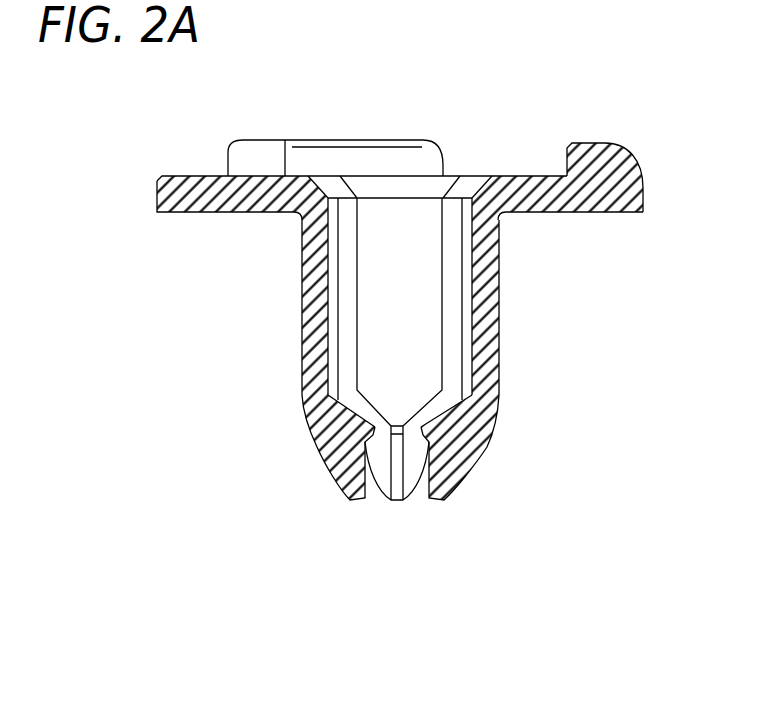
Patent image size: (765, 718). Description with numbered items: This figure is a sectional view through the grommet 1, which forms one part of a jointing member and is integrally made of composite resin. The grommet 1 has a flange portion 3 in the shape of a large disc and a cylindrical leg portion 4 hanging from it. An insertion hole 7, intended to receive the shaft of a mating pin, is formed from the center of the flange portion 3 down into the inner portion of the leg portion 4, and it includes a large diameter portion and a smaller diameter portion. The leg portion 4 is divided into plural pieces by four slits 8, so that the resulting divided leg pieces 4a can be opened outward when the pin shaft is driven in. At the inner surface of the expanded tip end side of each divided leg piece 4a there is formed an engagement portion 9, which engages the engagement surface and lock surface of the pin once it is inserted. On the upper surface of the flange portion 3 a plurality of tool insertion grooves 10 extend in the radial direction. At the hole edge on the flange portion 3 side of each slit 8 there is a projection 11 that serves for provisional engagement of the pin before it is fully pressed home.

The grommet 1 is at (617, 440).
The flange portion 3 is at (597, 143).
The leg portion 4 is at (500, 259).
The divided leg piece 4a is at (310, 373).
The insertion hole 7 is at (380, 238).
The slit 8 is at (343, 319).
The engagement portion 9 is at (362, 428).
The tool insertion groove 10 is at (186, 176).
The projection 11 is at (333, 187).